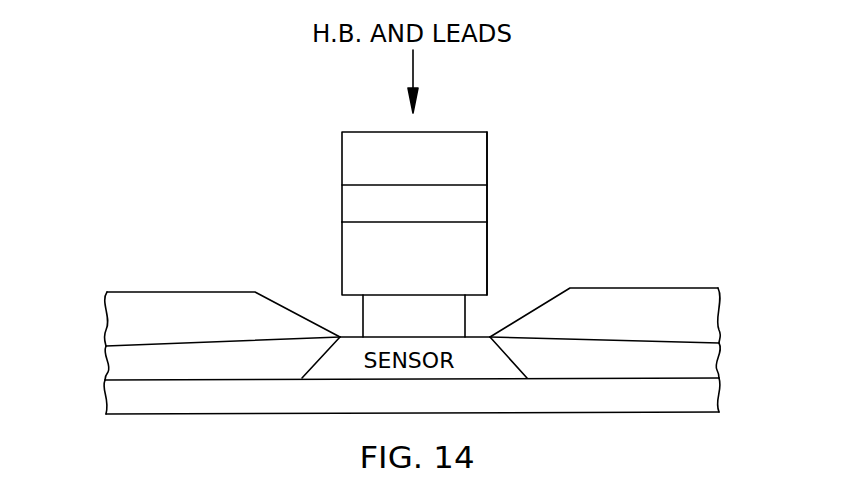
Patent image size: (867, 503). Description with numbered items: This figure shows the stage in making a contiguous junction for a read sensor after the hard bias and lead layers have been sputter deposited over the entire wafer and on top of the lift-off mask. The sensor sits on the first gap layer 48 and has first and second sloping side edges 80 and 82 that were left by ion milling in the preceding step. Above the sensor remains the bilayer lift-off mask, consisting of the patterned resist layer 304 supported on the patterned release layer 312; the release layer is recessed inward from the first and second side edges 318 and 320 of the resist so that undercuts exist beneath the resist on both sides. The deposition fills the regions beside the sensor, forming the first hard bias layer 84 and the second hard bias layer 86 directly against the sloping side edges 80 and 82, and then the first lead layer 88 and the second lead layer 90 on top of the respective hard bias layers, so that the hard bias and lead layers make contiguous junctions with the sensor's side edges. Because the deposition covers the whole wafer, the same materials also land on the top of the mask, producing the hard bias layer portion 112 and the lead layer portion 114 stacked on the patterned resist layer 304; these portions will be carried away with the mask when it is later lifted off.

The lead layer portion 114 is at (480, 159).
The hard bias layer portion 112 is at (350, 197).
The patterned resist layer 304 is at (350, 235).
The first side edge of the patterned resist layer 318 is at (345, 265).
The second side edge of the patterned resist layer 320 is at (488, 242).
The patterned release layer 312 is at (455, 318).
The first lead layer 88 is at (117, 316).
The first hard bias layer 84 is at (117, 364).
The first gap layer 48 is at (114, 402).
The first sloping side edge of the sensor 80 is at (317, 362).
The second sloping side edge of the sensor 82 is at (513, 356).
The second lead layer 90 is at (719, 317).
The second hard bias layer 86 is at (719, 360).